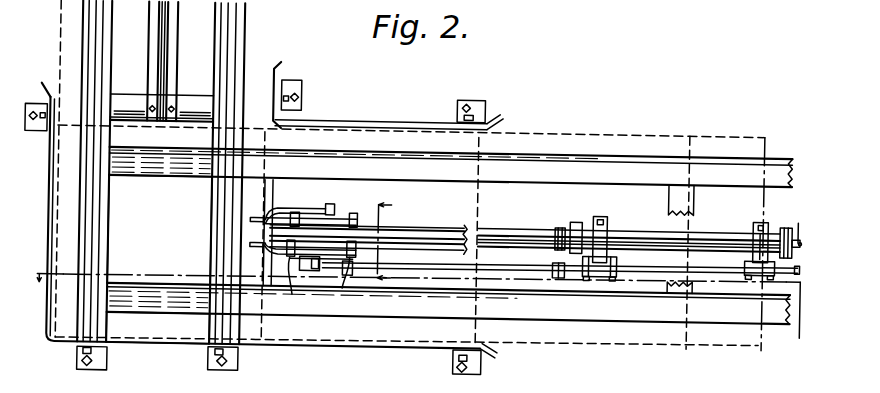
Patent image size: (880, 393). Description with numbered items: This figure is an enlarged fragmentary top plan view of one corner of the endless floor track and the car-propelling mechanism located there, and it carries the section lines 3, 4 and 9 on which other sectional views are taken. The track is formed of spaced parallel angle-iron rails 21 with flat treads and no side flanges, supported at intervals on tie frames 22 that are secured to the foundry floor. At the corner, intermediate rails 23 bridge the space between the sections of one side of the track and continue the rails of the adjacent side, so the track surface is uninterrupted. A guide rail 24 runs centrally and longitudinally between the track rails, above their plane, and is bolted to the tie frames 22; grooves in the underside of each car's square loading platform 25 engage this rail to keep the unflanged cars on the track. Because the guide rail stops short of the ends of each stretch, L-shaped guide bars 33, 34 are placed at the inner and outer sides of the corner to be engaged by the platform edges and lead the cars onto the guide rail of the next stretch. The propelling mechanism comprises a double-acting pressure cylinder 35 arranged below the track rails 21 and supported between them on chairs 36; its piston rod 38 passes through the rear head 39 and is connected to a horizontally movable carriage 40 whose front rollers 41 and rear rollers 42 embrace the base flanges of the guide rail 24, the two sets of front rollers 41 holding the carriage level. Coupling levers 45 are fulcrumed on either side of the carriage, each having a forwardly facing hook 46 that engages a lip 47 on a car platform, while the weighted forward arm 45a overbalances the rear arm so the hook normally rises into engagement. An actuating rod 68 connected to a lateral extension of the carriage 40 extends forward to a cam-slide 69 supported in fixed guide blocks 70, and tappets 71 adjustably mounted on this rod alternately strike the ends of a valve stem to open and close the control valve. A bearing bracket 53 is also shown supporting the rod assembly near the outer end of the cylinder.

The section line 3— 3 is at (411, 313).
The section line 4— 4 is at (547, 231).
The section line 9— 9 is at (377, 238).
The rails 21 is at (436, 177).
The tie frames 22 is at (196, 113).
The intermediate rails 23 is at (173, 172).
The guide rail 24 is at (150, 13).
The loading platform 25 is at (612, 126).
The L-shaped guide bar 33 is at (356, 121).
The L-shaped guide bar 34 is at (163, 342).
The double-acting pressure cylinder 35 is at (711, 221).
The chairs 36 is at (605, 212).
The piston rod 38 is at (629, 229).
The rear head 39 is at (582, 213).
The carriage 40 is at (305, 205).
The front rollers 41 is at (329, 287).
The rear rollers 42 is at (258, 242).
The coupling levers 45 is at (284, 210).
The forward arm 45a is at (315, 204).
The hook 46 is at (257, 218).
The lip 47 is at (407, 238).
The bearing bracket 53 is at (784, 214).
The actuating rod 68 is at (477, 262).
The cam-slide 69 is at (720, 260).
The guide blocks 70 is at (591, 266).
The tappets 71 is at (559, 268).